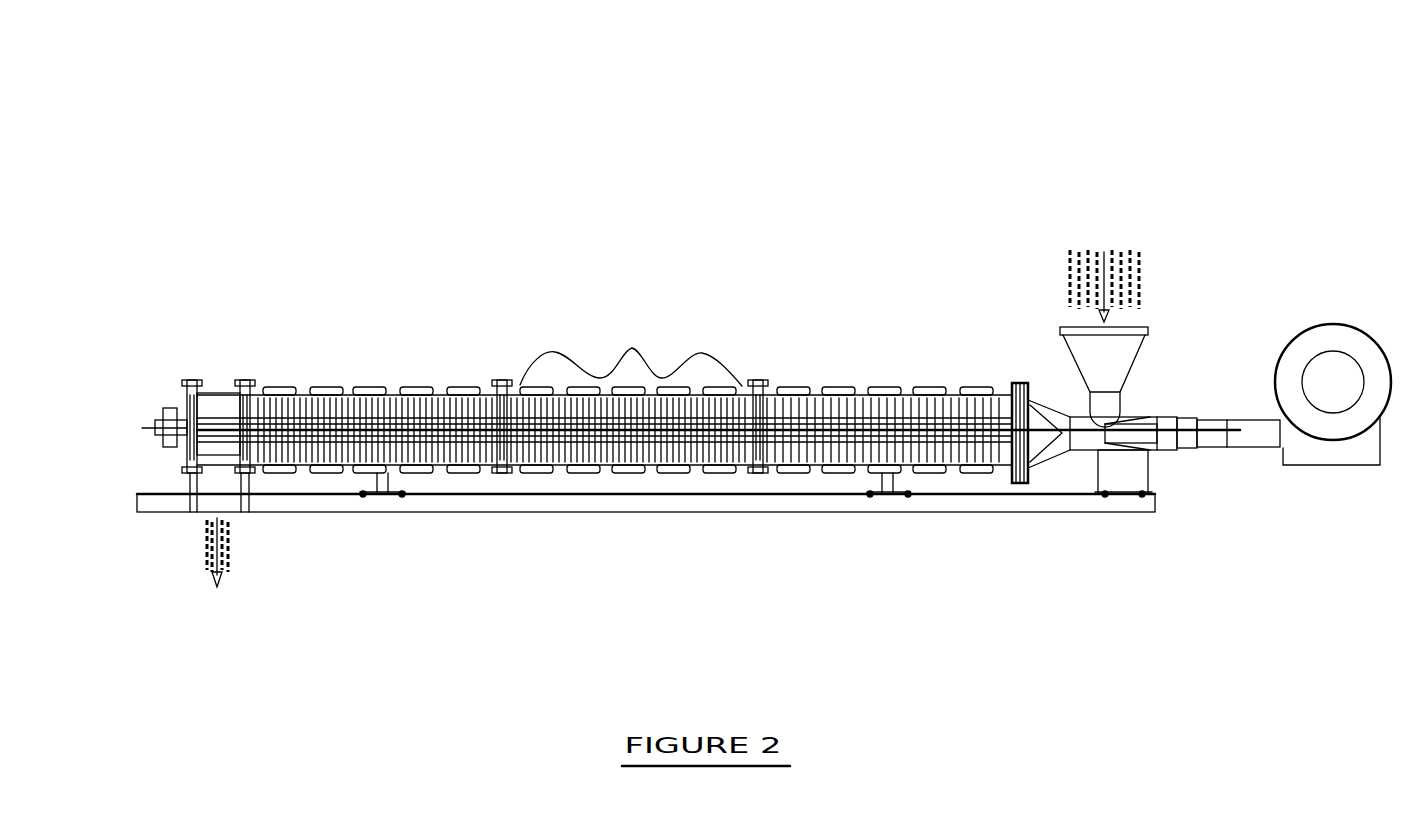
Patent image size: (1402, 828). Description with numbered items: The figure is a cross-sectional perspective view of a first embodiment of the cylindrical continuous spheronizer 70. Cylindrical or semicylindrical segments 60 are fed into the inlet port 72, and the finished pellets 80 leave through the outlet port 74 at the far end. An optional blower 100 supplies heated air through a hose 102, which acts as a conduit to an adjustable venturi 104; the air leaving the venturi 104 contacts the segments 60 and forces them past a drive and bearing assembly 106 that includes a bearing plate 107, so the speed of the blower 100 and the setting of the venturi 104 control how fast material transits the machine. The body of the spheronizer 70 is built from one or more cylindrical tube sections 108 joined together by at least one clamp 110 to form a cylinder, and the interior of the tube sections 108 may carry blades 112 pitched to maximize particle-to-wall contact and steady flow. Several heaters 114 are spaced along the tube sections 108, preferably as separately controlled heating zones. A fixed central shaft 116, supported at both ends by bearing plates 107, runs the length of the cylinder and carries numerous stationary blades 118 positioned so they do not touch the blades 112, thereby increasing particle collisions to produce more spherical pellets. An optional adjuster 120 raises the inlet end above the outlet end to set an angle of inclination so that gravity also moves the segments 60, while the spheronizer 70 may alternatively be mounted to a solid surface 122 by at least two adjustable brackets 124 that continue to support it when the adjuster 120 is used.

The spheronizer 70 is at (635, 212).
The bearing plate 107 is at (190, 385).
The outlet port 74 is at (238, 513).
The clamp 110 is at (502, 385).
The heater 114 is at (423, 387).
The blades 112 is at (667, 440).
The stationary blades 118 is at (617, 440).
The fixed central shaft 116 is at (633, 440).
The cylindrical tube sections 108 is at (630, 348).
The drive and bearing assembly 106 is at (1012, 385).
The inlet port 72 is at (1088, 387).
The segments 60 is at (1070, 262).
The venturi 104 is at (1153, 417).
The adjuster 120 is at (1125, 482).
The hose 102 is at (1217, 417).
The blower 100 is at (1327, 338).
The solid surface 122 is at (813, 510).
The brackets 124 is at (383, 498).
The pellets 80 is at (200, 555).